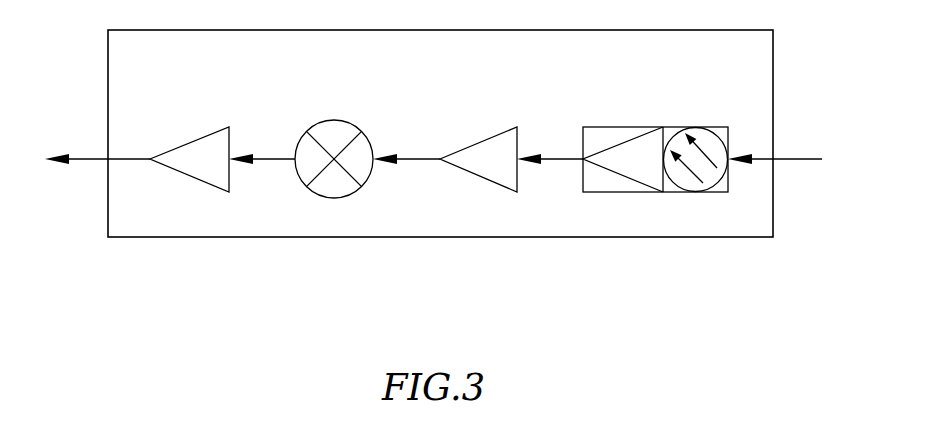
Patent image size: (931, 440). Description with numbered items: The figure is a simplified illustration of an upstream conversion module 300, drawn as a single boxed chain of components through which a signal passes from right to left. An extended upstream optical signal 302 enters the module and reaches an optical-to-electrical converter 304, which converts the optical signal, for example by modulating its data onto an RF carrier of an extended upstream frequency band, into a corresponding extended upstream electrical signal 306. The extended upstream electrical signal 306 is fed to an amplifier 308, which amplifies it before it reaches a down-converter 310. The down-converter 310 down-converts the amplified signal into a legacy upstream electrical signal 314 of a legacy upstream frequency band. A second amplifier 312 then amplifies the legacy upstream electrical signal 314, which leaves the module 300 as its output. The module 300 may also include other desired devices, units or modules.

The upstream conversion module 300 is at (598, 267).
The extended upstream optical signal 302 is at (778, 160).
The optical-to-electrical converter 304 is at (645, 126).
The extended upstream electrical signal 306 is at (548, 162).
The amplifier 308 is at (468, 145).
The down-converter 310 is at (342, 121).
The amplifier 312 is at (179, 143).
The legacy upstream electrical signal 314 is at (80, 162).